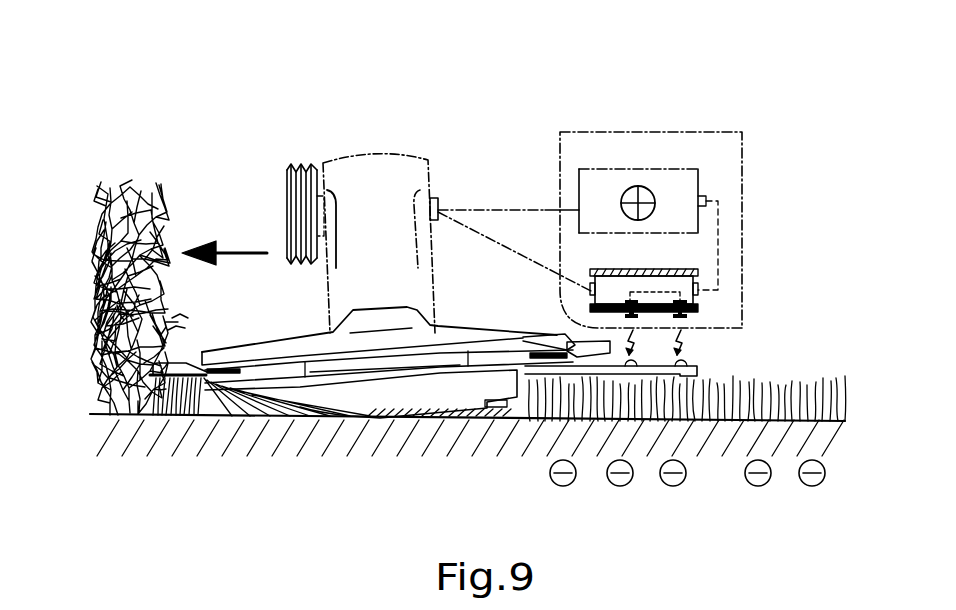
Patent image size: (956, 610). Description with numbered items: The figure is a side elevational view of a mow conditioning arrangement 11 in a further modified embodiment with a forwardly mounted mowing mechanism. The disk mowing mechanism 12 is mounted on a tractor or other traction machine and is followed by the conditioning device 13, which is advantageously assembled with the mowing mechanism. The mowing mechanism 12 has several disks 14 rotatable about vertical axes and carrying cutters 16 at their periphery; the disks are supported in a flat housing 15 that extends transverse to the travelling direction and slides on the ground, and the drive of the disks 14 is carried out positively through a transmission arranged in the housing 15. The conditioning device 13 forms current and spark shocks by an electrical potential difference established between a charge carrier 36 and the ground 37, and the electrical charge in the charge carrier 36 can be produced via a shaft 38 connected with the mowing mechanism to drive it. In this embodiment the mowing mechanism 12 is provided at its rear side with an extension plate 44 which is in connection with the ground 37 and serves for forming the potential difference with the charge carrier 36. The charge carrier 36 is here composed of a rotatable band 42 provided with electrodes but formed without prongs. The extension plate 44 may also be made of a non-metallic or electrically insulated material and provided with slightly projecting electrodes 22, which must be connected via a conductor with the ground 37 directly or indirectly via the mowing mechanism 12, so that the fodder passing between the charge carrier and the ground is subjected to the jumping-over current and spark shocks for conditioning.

The mow conditioning arrangement 11 is at (572, 103).
The disk mowing mechanism 12 is at (449, 312).
The conditioning device 13 is at (843, 128).
The disks 14 is at (527, 348).
The housing 15 is at (333, 397).
The cutters 16 is at (177, 368).
The electrodes 22 is at (690, 310).
The charge carrier 36 is at (734, 226).
The ground 37 is at (732, 491).
The shaft 38 is at (490, 236).
The rotatable band 42 is at (686, 269).
The extension plate 44 is at (690, 373).